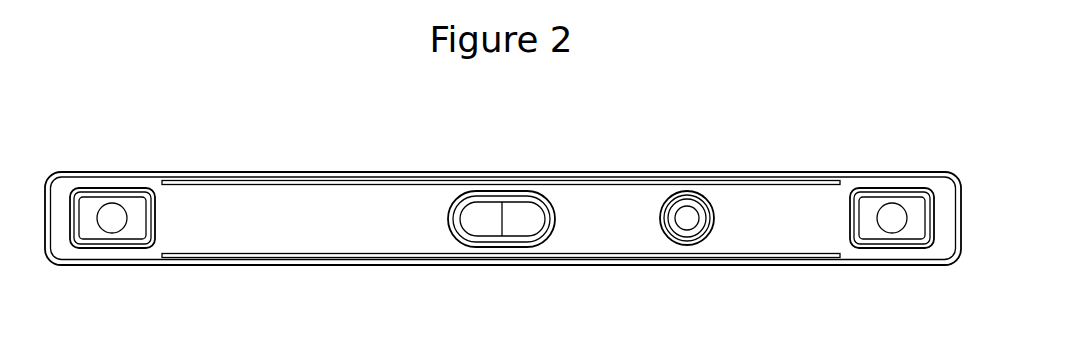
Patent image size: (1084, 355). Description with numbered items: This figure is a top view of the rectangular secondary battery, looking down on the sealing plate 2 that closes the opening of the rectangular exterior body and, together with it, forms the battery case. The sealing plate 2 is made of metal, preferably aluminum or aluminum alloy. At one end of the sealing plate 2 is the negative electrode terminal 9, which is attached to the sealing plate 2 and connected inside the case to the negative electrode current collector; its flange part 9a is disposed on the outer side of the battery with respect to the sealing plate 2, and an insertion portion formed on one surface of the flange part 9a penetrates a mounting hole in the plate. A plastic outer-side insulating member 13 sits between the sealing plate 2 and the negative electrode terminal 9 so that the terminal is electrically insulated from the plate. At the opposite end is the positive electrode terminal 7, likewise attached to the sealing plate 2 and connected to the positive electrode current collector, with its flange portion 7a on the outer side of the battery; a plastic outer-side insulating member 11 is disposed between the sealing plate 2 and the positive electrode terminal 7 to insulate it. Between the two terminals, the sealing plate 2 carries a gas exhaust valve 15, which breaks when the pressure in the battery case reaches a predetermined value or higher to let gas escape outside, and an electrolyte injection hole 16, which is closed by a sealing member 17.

The sealing plate 2 is at (603, 227).
The positive electrode terminal 7 is at (892, 228).
The flange portion 7a is at (912, 224).
The negative electrode terminal 9 is at (112, 228).
The flange part 9a is at (137, 218).
The outer-side insulating member 11 is at (890, 190).
The outer-side insulating member 13 is at (123, 190).
The gas exhaust valve 15 is at (485, 223).
The electrolyte injection hole 16 is at (687, 230).
The sealing member 17 is at (687, 216).